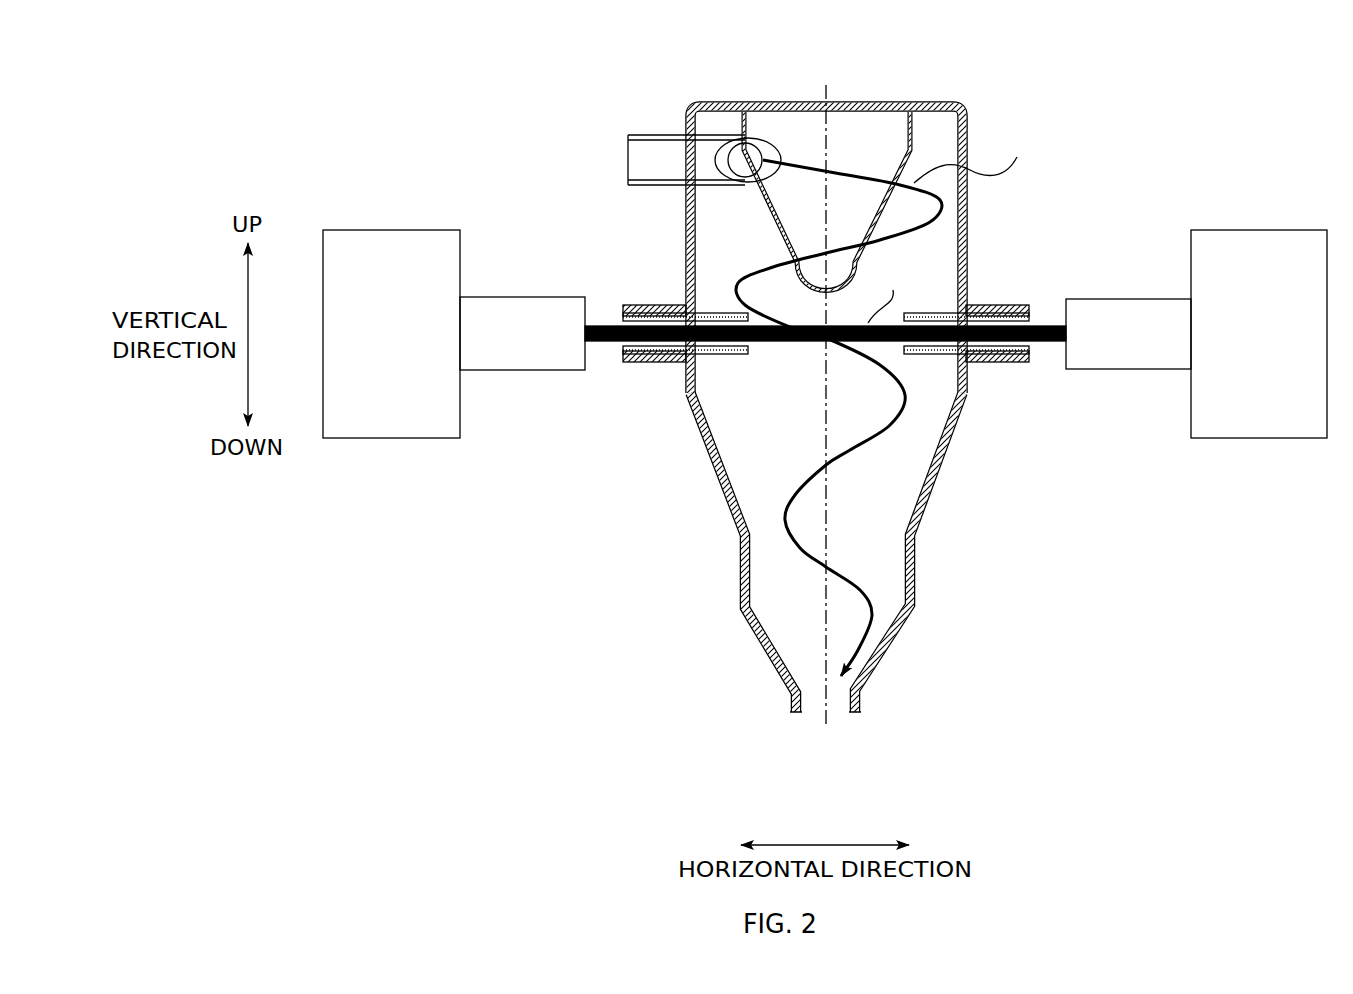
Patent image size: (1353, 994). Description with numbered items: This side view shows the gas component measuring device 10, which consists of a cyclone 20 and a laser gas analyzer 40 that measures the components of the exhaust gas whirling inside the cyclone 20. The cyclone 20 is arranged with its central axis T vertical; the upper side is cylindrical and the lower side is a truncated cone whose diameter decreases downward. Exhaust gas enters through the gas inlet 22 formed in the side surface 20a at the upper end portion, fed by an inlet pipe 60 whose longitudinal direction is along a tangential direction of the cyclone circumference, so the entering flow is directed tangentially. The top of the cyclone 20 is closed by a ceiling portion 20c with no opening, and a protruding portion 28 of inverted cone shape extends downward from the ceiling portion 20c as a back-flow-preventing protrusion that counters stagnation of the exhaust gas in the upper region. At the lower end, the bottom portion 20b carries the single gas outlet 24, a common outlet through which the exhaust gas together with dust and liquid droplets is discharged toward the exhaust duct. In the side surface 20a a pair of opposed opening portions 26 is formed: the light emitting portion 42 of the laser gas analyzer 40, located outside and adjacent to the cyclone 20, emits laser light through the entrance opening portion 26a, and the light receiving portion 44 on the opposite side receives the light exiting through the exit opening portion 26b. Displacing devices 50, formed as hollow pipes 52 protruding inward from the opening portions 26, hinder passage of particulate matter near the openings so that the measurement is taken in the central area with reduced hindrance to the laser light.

The gas component measuring device 10 is at (825, 402).
The cyclone 20 is at (839, 402).
The side surface 20a is at (964, 238).
The bottom portion 20b is at (840, 713).
The ceiling portion 20c is at (927, 101).
The gas inlet 22 is at (763, 146).
The gas outlet 24 is at (806, 713).
The opening portions 26 is at (826, 415).
The entrance opening portion 26a is at (715, 394).
The exit opening portion 26b is at (932, 415).
The protruding portion 28 is at (774, 209).
The laser gas analyzer 40 is at (825, 357).
The light emitting portion 42 is at (518, 386).
The light receiving portion 44 is at (1153, 389).
The displacing devices 50 is at (742, 355).
The hollow pipes 52 is at (907, 353).
The inlet pipe 60 is at (643, 134).
The central axis T is at (829, 86).